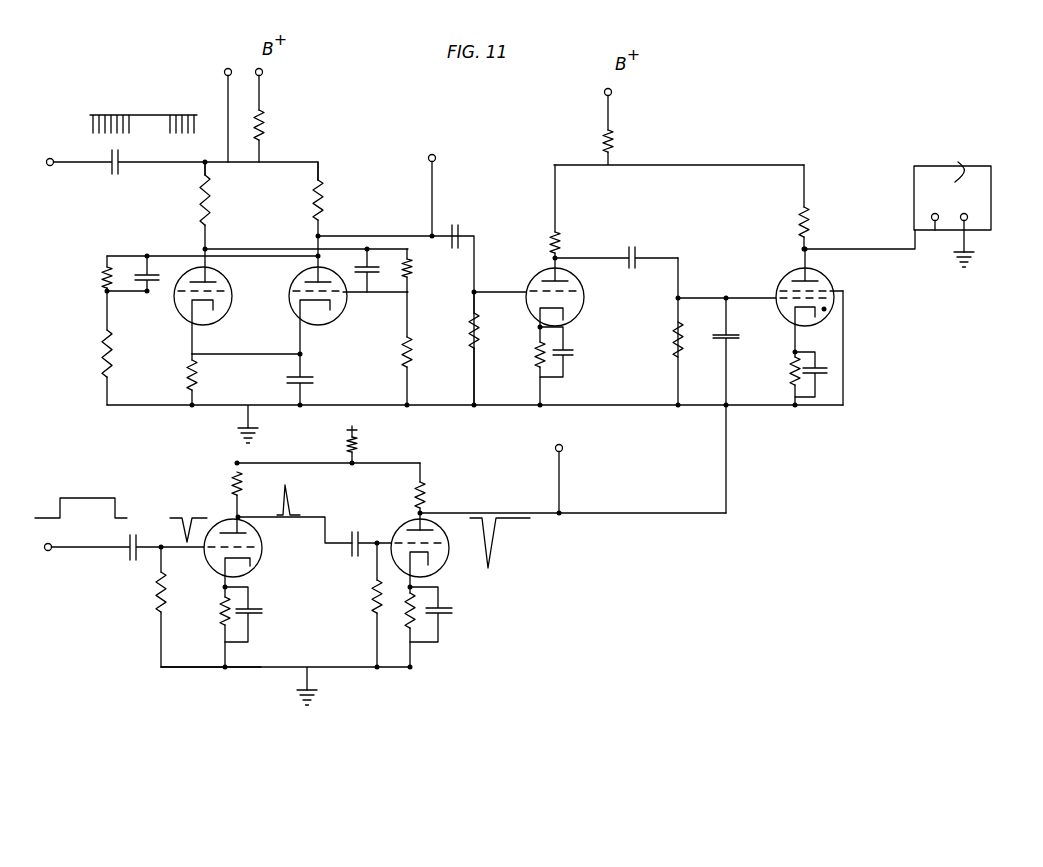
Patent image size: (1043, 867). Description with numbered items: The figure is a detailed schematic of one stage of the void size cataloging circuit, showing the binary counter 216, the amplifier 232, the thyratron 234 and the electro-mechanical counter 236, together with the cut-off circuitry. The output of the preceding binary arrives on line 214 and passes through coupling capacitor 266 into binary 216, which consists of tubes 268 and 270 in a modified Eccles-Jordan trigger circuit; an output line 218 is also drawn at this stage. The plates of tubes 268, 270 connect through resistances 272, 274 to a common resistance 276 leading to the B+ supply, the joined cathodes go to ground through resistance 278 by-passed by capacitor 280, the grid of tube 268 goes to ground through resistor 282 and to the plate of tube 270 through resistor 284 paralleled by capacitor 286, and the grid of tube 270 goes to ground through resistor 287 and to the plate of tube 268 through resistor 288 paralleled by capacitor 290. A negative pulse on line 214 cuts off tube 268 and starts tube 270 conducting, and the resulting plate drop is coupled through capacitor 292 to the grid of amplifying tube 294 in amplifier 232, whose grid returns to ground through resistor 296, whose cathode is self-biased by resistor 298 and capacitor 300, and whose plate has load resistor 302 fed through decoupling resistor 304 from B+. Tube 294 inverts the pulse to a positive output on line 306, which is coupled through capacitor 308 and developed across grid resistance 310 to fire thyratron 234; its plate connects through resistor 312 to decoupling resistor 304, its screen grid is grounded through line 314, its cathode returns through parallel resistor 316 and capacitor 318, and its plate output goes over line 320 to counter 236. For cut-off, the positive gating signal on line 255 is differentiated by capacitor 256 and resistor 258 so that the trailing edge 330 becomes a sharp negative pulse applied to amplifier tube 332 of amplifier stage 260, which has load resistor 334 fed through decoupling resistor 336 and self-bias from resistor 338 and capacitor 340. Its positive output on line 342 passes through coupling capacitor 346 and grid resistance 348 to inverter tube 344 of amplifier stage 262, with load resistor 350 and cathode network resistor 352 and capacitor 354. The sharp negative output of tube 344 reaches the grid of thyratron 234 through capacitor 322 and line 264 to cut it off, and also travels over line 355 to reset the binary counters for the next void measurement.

The line 214 is at (88, 166).
The binary counter 216 is at (315, 147).
The output terminal 218 is at (436, 178).
The amplifier 232 is at (572, 257).
The thyratron tube 234 is at (840, 279).
The counter 236 is at (975, 183).
The line 255 is at (90, 550).
The capacitor 256 is at (135, 535).
The resistor 258 is at (155, 600).
The amplifier stage 260 is at (203, 613).
The amplifier stage 262 is at (463, 572).
The line 264 is at (590, 511).
The coupling capacitor 266 is at (124, 161).
The tube 268 is at (186, 306).
The tube 270 is at (338, 310).
The resistance 272 is at (213, 202).
The resistance 274 is at (325, 197).
The resistance 276 is at (265, 130).
The resistance 278 is at (198, 375).
The capacitor 280 is at (306, 378).
The resistor 282 is at (100, 345).
The resistor 284 is at (100, 278).
The capacitor 286 is at (150, 272).
The resistor 287 is at (410, 352).
The resistor 288 is at (409, 270).
The capacitor 290 is at (356, 262).
The capacitor 292 is at (450, 225).
The amplifying tube 294 is at (565, 314).
The resistor 296 is at (478, 335).
The resistor 298 is at (535, 348).
The capacitor 300 is at (568, 357).
The load resistor 302 is at (553, 252).
The decoupling resistor 304 is at (614, 140).
The line 306 is at (610, 257).
The capacitor 308 is at (642, 256).
The grid resistance 310 is at (676, 345).
The resistor 312 is at (810, 210).
The line 314 is at (842, 352).
The resistor 316 is at (795, 375).
The capacitor 318 is at (830, 368).
The line 320 is at (860, 248).
The capacitor 322 is at (718, 340).
The trailing edge of the gating pulse 330 is at (118, 505).
The amplifier tube 332 is at (260, 560).
The load resistor 334 is at (235, 480).
The decoupling resistor 336 is at (358, 446).
The resistor 338 is at (220, 614).
The capacitor 340 is at (262, 612).
The line 342 is at (305, 515).
The amplifier and inverter tube 344 is at (450, 562).
The coupling capacitor 346 is at (352, 535).
The grid resistance 348 is at (373, 592).
The load resistor 350 is at (428, 490).
The resistor 352 is at (408, 620).
The capacitor 354 is at (447, 614).
The line 355 is at (226, 104).